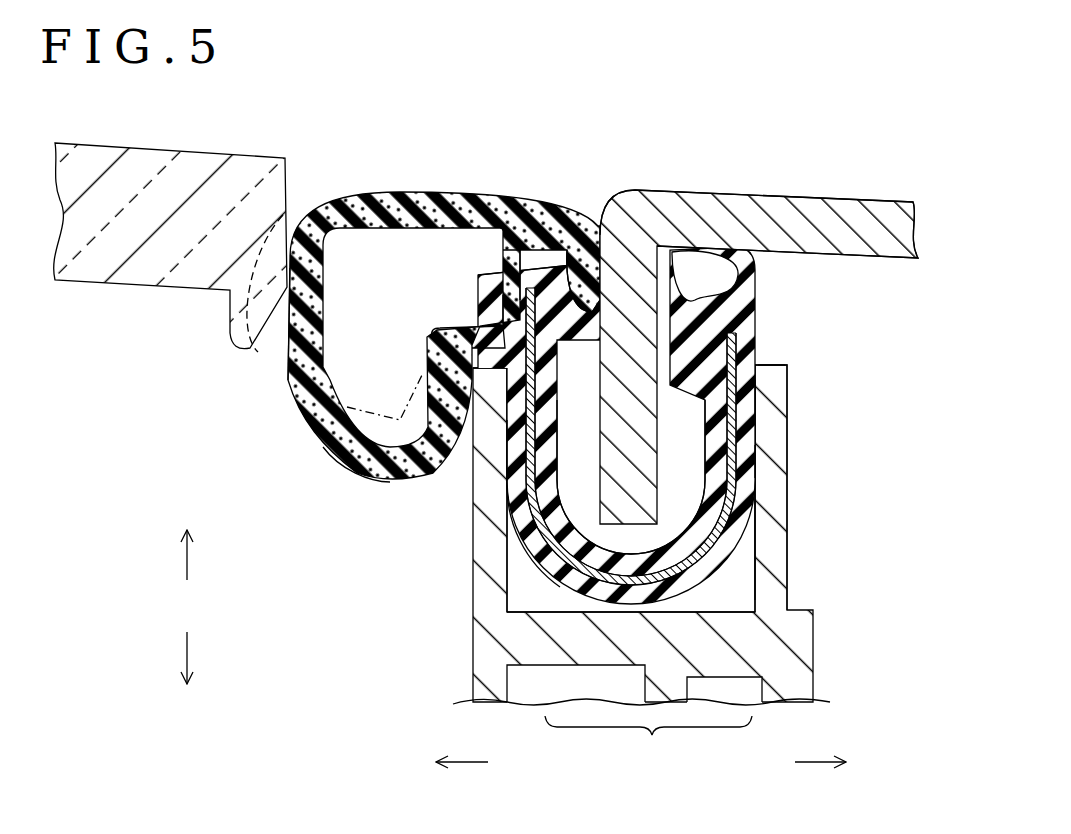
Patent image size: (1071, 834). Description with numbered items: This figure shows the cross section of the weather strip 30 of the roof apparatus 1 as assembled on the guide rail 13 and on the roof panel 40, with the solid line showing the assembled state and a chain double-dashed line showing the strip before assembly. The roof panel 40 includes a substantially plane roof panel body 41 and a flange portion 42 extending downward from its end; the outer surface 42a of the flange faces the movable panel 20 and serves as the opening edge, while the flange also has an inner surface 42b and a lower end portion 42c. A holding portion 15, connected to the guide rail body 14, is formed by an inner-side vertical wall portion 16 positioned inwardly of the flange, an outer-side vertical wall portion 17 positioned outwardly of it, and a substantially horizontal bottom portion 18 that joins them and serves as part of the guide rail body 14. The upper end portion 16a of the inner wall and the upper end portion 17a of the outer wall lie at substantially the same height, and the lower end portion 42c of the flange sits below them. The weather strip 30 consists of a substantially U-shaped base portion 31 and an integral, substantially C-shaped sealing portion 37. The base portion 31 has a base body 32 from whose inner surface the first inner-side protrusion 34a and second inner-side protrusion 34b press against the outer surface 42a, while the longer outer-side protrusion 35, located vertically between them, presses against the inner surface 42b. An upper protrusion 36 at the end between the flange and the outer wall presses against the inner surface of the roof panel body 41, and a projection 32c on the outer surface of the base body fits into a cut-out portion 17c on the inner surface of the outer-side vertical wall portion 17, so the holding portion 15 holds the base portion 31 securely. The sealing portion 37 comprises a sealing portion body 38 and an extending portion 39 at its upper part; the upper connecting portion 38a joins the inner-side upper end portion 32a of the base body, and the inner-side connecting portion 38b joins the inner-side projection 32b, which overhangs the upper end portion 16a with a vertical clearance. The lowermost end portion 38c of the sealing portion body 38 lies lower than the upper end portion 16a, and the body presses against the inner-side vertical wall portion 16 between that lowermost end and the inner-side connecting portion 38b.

The roof apparatus 1 is at (588, 117).
The guide rail 13 is at (630, 539).
The guide rail body 14 is at (603, 539).
The holding portion 15 is at (603, 539).
The inner-side vertical wall portion 16 is at (461, 531).
The upper end portion of the inner-side vertical wall portion 16a is at (426, 372).
The outer-side vertical wall portion 17 is at (786, 510).
The upper end portion of the outer-side vertical wall portion 17a is at (773, 362).
The cut-out portion 17c is at (762, 427).
The bottom portion 18 is at (631, 662).
The movable panel 20 is at (148, 162).
The weather strip 30 is at (570, 377).
The base portion 31 is at (621, 392).
The base body 32 is at (740, 572).
The inner-side upper end portion 32a is at (545, 222).
The inner-side projection 32b is at (462, 330).
The projection 32c is at (763, 400).
The first inner-side protrusion 34a is at (507, 478).
The second inner-side protrusion 34b is at (515, 560).
The outer-side protrusion 35 is at (760, 461).
The upper protrusion 36 is at (668, 258).
The sealing portion 37 is at (341, 168).
The sealing portion body 38 is at (297, 400).
The upper connecting portion 38a is at (508, 270).
The inner-side connecting portion 38b is at (500, 322).
The lowermost end portion 38c is at (378, 481).
The extending portion 39 is at (588, 242).
The roof panel 40 is at (759, 315).
The roof panel body 41 is at (790, 198).
The flange portion 42 is at (688, 467).
The outer surface of the flange portion 42a is at (556, 575).
The inner surface of the flange portion 42b is at (757, 491).
The lower end portion of the flange portion 42c is at (622, 600).